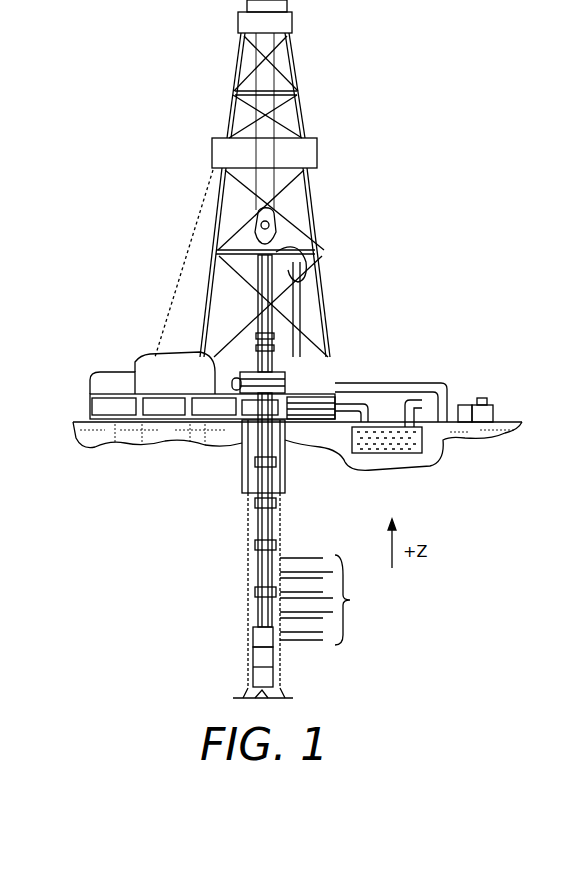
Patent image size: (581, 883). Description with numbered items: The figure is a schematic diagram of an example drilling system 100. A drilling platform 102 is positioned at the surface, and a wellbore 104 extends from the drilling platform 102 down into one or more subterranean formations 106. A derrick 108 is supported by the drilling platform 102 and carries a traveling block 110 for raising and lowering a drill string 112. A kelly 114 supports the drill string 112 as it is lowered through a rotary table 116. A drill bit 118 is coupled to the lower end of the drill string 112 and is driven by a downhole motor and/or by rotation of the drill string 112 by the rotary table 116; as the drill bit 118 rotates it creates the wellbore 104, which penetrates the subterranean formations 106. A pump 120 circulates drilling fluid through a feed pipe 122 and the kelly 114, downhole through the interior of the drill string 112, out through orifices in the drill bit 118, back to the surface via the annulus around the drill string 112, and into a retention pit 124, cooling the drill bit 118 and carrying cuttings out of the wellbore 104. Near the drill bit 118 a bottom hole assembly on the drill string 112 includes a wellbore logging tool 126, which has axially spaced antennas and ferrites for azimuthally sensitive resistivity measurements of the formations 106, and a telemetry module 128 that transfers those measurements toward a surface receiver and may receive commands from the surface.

The drilling system 100 is at (420, 141).
The drilling platform 102 is at (88, 400).
The wellbore 104 is at (283, 526).
The subterranean formations 106 is at (339, 600).
The derrick 108 is at (300, 70).
The traveling block 110 is at (288, 224).
The drill string 112 is at (277, 508).
The kelly 114 is at (300, 280).
The rotary table 116 is at (326, 357).
The drill bit 118 is at (283, 688).
The pump 120 is at (450, 400).
The feed pipe 122 is at (412, 383).
The retention pit 124 is at (380, 458).
The wellbore logging tool 126 is at (254, 660).
The telemetry module 128 is at (252, 640).